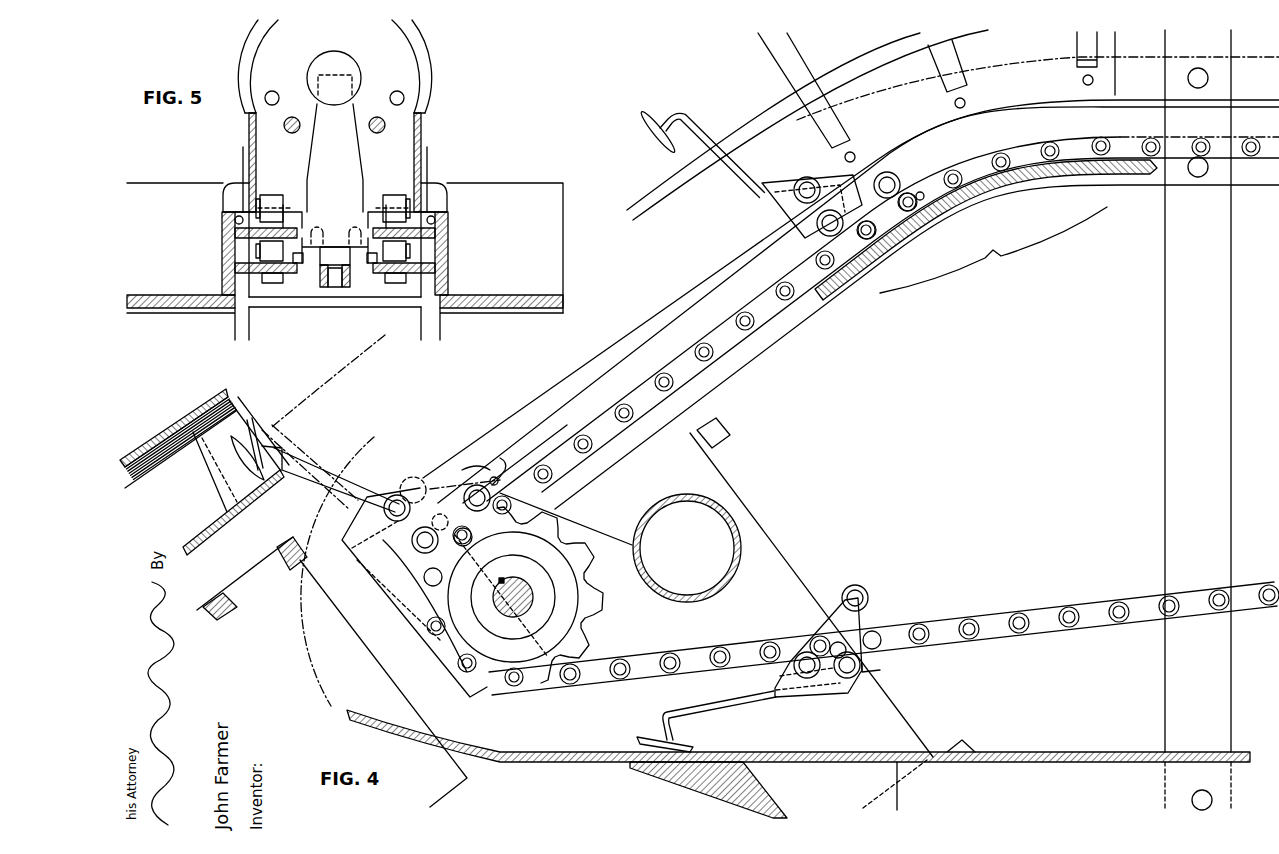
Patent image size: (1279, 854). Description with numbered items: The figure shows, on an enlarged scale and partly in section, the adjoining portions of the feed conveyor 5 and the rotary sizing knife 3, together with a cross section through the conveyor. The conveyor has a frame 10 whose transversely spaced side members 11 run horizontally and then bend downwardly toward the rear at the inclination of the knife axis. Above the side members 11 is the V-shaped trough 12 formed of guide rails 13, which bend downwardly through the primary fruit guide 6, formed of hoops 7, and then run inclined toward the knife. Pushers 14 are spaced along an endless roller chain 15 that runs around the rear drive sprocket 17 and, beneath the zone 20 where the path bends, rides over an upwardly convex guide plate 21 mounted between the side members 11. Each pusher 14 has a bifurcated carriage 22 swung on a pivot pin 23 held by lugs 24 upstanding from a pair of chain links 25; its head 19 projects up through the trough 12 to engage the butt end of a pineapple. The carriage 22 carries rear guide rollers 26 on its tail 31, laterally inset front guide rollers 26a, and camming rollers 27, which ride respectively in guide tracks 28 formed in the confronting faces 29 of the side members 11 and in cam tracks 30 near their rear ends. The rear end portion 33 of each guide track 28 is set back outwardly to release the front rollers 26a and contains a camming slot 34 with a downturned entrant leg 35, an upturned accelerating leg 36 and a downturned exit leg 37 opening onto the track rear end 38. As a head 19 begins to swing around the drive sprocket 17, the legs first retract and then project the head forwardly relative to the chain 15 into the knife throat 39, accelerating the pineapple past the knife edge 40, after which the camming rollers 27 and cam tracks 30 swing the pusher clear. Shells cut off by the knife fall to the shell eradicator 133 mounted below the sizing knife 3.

In FIG. 4, the sizing knife 3 is at (167, 437).
In FIG. 4, the feed conveyor 5 is at (597, 168).
In FIG. 5, the primary fruit guide 6 is at (429, 46).
In FIG. 4, the primary fruit guide 6 is at (762, 38).
In FIG. 5, the hoops 7 is at (428, 80).
In FIG. 4, the hoops 7 is at (778, 58).
In FIG. 4, the frame 10 is at (1165, 377).
In FIG. 5, the side members 11 is at (448, 287).
In FIG. 4, the side members 11 is at (1194, 188).
In FIG. 5, the trough 12 is at (275, 83).
In FIG. 5, the guide rails 13 is at (378, 117).
In FIG. 4, the guide rails 13 is at (758, 118).
In FIG. 5, the pushers 14 is at (367, 61).
In FIG. 4, the pushers 14 is at (692, 105).
In FIG. 4, the roller chain 15 is at (1028, 148).
In FIG. 4, the rear sprocket 17 is at (582, 537).
In FIG. 5, the head 19 is at (362, 77).
In FIG. 4, the head 19 is at (644, 140).
In FIG. 4, the zone 20 is at (993, 250).
In FIG. 5, the guide plate 21 is at (324, 300).
In FIG. 4, the guide plate 21 is at (967, 197).
In FIG. 5, the carriage 22 is at (300, 186).
In FIG. 4, the carriage 22 is at (830, 180).
In FIG. 5, the pivot pin 23 is at (336, 233).
In FIG. 4, the pivot pin 23 is at (843, 213).
In FIG. 5, the lugs 24 is at (335, 247).
In FIG. 4, the lugs 24 is at (818, 242).
In FIG. 5, the links 25 is at (350, 282).
In FIG. 4, the links 25 is at (845, 233).
In FIG. 5, the rear guide rollers 26 is at (398, 279).
In FIG. 4, the rear guide rollers 26 is at (893, 178).
In FIG. 5, the front guide rollers 26a is at (335, 265).
In FIG. 4, the front guide rollers 26a is at (816, 216).
In FIG. 5, the camming rollers 27 is at (393, 195).
In FIG. 4, the camming rollers 27 is at (790, 680).
In FIG. 5, the guide tracks 28 is at (412, 258).
In FIG. 4, the guide tracks 28 is at (1133, 135).
In FIG. 5, the confronting faces 29 is at (436, 220).
In FIG. 4, the confronting faces 29 is at (667, 303).
In FIG. 5, the cam tracks 30 is at (382, 220).
In FIG. 4, the cam tracks 30 is at (428, 565).
In FIG. 4, the tail 31 is at (915, 190).
In FIG. 4, the rear end portion of guide track 33 is at (580, 377).
In FIG. 4, the camming slot 34 is at (481, 471).
In FIG. 4, the entrant leg 35 is at (537, 450).
In FIG. 4, the accelerating leg 36 is at (500, 458).
In FIG. 4, the exit leg 37 is at (470, 472).
In FIG. 4, the rear ends of guide tracks 38 is at (443, 515).
In FIG. 4, the throat 39 is at (182, 504).
In FIG. 4, the knife edge 40 is at (229, 400).
In FIG. 4, the shell eradicator 133 is at (249, 562).